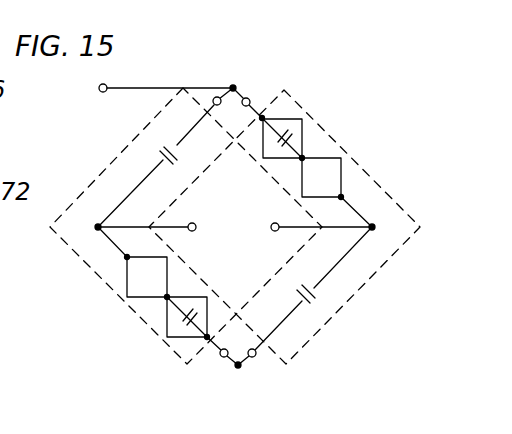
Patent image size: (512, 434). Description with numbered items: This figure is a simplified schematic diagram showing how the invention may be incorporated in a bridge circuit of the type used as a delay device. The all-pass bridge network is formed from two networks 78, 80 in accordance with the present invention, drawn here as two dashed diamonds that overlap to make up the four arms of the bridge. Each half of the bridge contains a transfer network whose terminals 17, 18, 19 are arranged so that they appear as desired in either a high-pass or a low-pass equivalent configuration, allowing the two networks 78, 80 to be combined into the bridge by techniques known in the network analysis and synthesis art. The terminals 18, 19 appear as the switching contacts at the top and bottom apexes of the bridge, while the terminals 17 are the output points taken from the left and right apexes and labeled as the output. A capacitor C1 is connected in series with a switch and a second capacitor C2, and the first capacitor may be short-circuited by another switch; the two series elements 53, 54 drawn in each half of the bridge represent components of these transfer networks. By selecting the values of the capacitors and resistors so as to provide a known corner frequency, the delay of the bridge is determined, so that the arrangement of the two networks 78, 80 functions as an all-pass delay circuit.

The terminal 17 is at (193, 222).
The terminal 18 is at (217, 97).
The terminal 19 is at (248, 98).
The nonlinear resistance element 53 is at (288, 106).
The resistor 54 is at (342, 179).
The network 78 is at (115, 155).
The network 80 is at (356, 152).
The capacitor C1 is at (288, 137).
The capacitor C2 is at (312, 300).